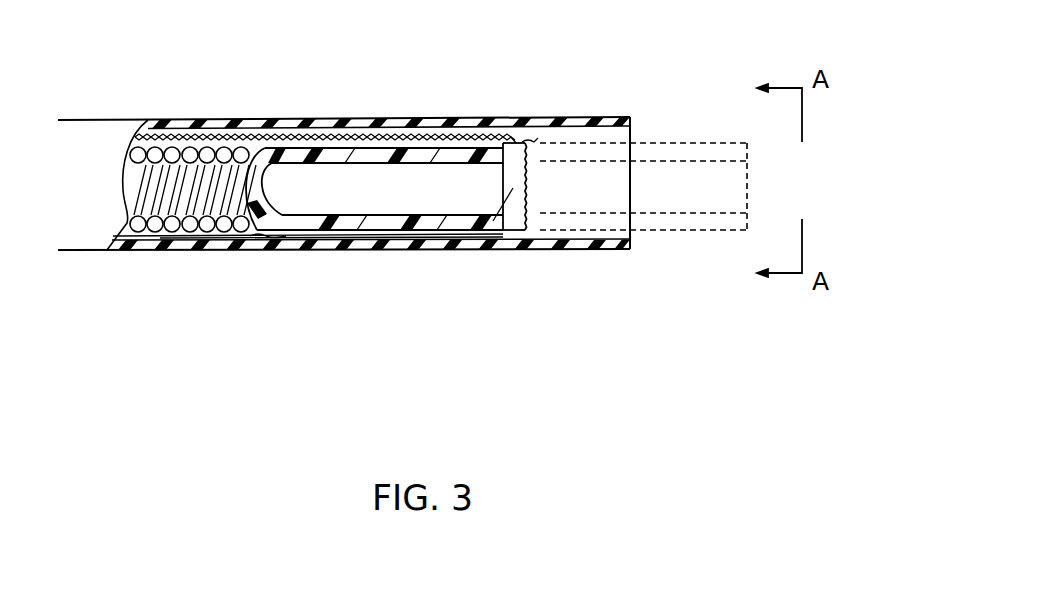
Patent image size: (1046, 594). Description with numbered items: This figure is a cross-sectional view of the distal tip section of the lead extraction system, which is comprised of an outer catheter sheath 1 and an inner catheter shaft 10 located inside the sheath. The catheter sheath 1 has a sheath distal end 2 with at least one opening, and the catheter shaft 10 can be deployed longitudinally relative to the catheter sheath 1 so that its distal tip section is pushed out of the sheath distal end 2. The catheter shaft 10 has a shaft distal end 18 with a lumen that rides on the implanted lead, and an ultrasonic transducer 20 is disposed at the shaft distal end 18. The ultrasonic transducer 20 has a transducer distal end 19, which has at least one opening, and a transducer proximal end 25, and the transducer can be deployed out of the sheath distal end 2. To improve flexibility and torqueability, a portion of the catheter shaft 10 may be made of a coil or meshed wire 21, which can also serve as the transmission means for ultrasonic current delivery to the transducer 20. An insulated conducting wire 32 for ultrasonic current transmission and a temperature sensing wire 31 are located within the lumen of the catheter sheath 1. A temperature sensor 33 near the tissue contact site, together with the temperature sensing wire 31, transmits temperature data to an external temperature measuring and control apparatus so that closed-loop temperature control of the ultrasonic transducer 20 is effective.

The catheter sheath 1 is at (352, 117).
The sheath distal end 2 is at (633, 112).
The catheter shaft 10 is at (402, 142).
The shaft distal end 18 is at (503, 231).
The transducer distal end 19 is at (748, 142).
The ultrasonic transducer 20 is at (463, 240).
The coil 21 is at (185, 142).
The transducer proximal end 25 is at (512, 235).
The temperature sensing wire 31 is at (261, 166).
The insulated conducting wire 32 is at (266, 237).
The temperature sensor 33 is at (532, 137).